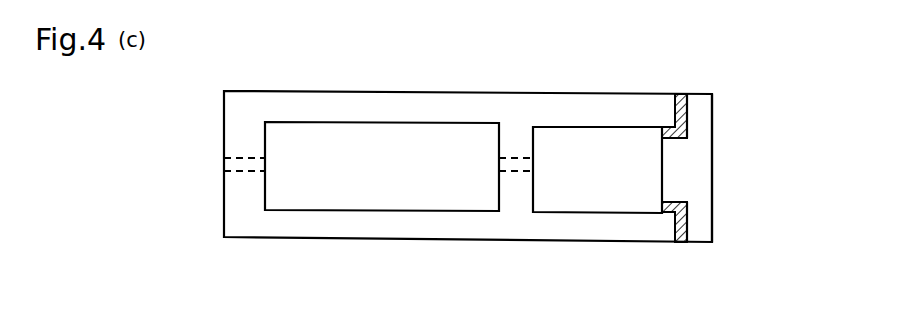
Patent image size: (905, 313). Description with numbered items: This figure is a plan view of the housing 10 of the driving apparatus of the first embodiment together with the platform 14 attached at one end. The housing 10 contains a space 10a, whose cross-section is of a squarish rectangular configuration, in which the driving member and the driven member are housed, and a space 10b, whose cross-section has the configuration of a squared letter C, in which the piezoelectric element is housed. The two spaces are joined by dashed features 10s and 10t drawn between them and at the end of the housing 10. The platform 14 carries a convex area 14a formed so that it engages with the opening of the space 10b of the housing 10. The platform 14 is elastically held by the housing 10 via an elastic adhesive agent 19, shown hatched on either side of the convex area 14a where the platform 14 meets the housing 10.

The housing 10 is at (482, 92).
The space 10a is at (358, 148).
The space 10b is at (572, 147).
The slit 10s is at (204, 183).
The through hole 10t is at (511, 175).
The platform 14 is at (697, 177).
The convex area 14a is at (673, 172).
The elastic adhesive agent 19 is at (680, 94).